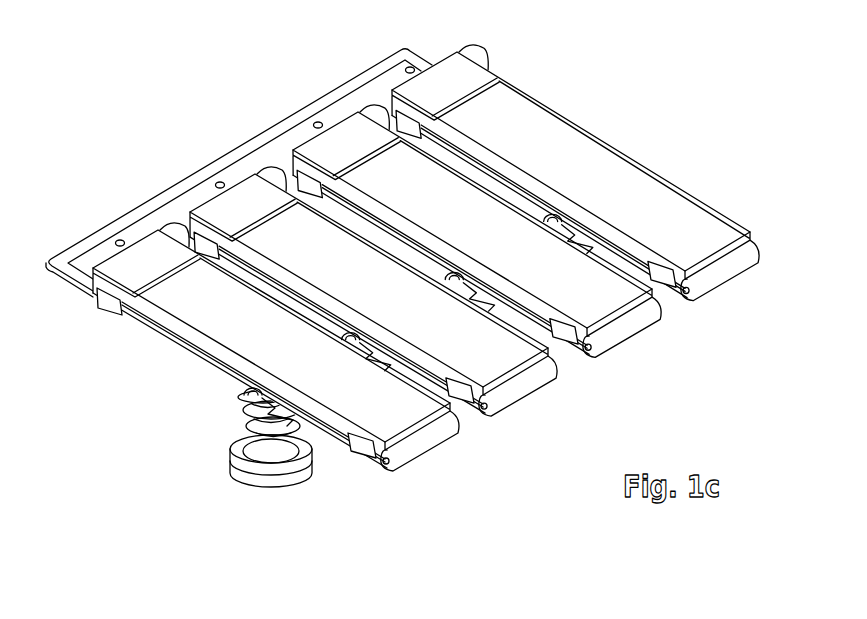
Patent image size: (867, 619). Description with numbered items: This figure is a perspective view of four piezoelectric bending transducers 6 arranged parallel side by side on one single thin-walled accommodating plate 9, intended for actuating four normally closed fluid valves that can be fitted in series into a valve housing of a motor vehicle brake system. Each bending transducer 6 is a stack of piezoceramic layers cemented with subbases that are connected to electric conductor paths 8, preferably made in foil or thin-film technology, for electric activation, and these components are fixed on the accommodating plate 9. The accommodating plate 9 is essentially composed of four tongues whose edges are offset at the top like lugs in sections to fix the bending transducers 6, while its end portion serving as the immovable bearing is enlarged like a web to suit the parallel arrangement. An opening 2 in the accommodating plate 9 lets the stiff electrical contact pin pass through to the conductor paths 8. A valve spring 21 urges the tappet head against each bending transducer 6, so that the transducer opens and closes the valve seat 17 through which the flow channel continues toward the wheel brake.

The opening 2 is at (116, 241).
The piezoelectric bending transducer 6 is at (448, 192).
The electric conductor paths 8 is at (85, 257).
The accommodating plate 9 is at (255, 147).
The valve seat 17 is at (288, 487).
The valve spring 21 is at (237, 423).